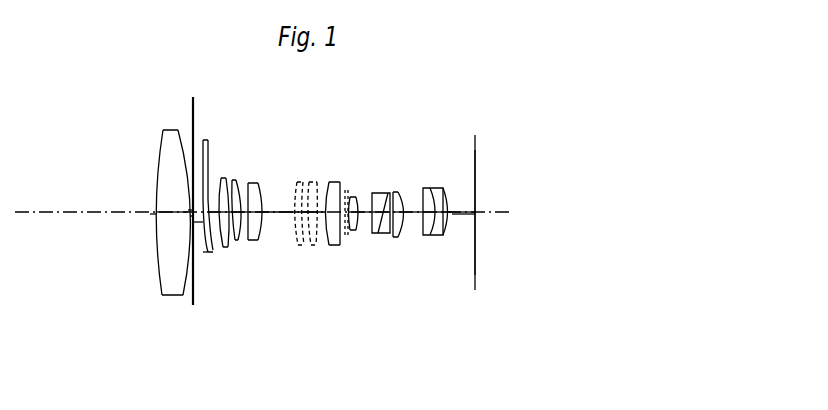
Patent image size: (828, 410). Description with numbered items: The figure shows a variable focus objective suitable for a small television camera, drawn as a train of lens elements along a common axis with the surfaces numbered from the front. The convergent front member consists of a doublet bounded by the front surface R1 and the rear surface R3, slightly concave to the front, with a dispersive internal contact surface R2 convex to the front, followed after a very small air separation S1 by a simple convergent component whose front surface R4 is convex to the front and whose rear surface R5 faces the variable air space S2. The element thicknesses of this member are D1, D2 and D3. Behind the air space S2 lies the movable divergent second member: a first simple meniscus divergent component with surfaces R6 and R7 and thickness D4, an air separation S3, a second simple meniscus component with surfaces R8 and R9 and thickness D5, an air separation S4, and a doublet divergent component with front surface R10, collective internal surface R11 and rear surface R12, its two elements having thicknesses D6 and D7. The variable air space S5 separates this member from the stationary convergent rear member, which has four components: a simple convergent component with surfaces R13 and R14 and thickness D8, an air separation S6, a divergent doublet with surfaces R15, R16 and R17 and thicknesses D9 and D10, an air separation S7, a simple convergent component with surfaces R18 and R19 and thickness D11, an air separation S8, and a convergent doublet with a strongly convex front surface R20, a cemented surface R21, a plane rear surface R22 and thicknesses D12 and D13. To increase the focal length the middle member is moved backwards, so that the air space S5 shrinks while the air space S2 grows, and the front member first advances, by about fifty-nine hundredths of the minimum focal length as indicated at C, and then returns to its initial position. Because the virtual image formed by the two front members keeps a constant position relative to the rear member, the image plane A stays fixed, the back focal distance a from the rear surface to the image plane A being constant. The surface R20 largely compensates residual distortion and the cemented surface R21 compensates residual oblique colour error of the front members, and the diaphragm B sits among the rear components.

The front surface of the front doublet component R1 is at (150, 173).
The internal contact surface of the front doublet R2 is at (188, 175).
The rear surface of the front doublet R3 is at (187, 193).
The front surface of the simple convergent front component R4 is at (190, 150).
The rear surface of the simple convergent front component R5 is at (193, 130).
The front surface of the first meniscus divergent component R6 is at (147, 131).
The rear surface of the first meniscus divergent component R7 is at (219, 188).
The front surface of the second meniscus divergent component R8 is at (229, 192).
The rear surface of the second meniscus divergent component R9 is at (238, 178).
The front surface of the divergent doublet component R10 is at (247, 183).
The internal surface of the divergent doublet component R11 is at (263, 190).
The rear surface of the divergent doublet component R12 is at (296, 183).
The front surface of the first rear component R13 is at (327, 185).
The rear surface of the first rear component R14 is at (341, 185).
The front surface of the rear divergent doublet R15 is at (357, 197).
The internal surface of the rear divergent doublet R16 is at (374, 193).
The rear surface of the rear divergent doublet R17 is at (388, 193).
The front surface of the third rear component R18 is at (402, 193).
The rear surface of the third rear component R19 is at (432, 188).
The front surface of the rear convergent doublet R20 is at (443, 195).
The cemented surface of the rear convergent doublet R21 is at (448, 208).
The rear surface of the objective R22 is at (452, 200).
The axial thickness of the first element D1 is at (158, 214).
The axial thickness of the second element D2 is at (186, 216).
The axial thickness of the third element D3 is at (178, 222).
The axial thickness of the fourth element D4 is at (209, 252).
The axial thickness of the fifth element D5 is at (236, 245).
The axial thickness of the sixth element D6 is at (250, 235).
The axial thickness of the seventh element D7 is at (262, 222).
The axial thickness of the eighth element D8 is at (347, 230).
The axial thickness of the ninth element D9 is at (395, 240).
The axial thickness of the tenth element D10 is at (400, 232).
The axial thickness of the eleventh element D11 is at (445, 238).
The axial thickness of the twelfth element D12 is at (445, 228).
The axial thickness of the thirteenth element D13 is at (445, 215).
The first axial air separation S1 is at (188, 213).
The variable air space between front and middle members S2 is at (198, 240).
The third axial air separation S3 is at (224, 250).
The fourth axial air separation S4 is at (242, 242).
The variable air space between middle and rear members S5 is at (343, 240).
The sixth axial air separation S6 is at (366, 225).
The seventh axial air separation S7 is at (425, 240).
The eighth axial air separation S8 is at (435, 236).
The image plane A is at (445, 190).
The diaphragm B is at (346, 190).
The forward advance of the front member C is at (150, 214).
The back focal distance a is at (452, 214).